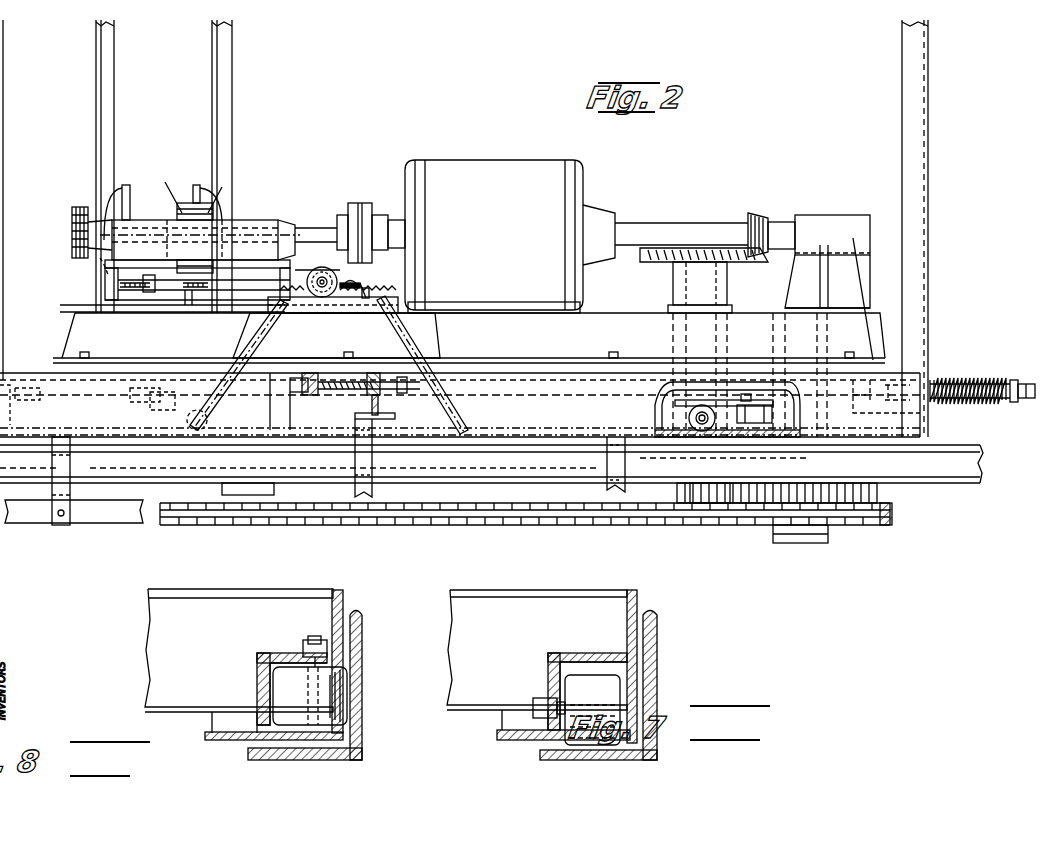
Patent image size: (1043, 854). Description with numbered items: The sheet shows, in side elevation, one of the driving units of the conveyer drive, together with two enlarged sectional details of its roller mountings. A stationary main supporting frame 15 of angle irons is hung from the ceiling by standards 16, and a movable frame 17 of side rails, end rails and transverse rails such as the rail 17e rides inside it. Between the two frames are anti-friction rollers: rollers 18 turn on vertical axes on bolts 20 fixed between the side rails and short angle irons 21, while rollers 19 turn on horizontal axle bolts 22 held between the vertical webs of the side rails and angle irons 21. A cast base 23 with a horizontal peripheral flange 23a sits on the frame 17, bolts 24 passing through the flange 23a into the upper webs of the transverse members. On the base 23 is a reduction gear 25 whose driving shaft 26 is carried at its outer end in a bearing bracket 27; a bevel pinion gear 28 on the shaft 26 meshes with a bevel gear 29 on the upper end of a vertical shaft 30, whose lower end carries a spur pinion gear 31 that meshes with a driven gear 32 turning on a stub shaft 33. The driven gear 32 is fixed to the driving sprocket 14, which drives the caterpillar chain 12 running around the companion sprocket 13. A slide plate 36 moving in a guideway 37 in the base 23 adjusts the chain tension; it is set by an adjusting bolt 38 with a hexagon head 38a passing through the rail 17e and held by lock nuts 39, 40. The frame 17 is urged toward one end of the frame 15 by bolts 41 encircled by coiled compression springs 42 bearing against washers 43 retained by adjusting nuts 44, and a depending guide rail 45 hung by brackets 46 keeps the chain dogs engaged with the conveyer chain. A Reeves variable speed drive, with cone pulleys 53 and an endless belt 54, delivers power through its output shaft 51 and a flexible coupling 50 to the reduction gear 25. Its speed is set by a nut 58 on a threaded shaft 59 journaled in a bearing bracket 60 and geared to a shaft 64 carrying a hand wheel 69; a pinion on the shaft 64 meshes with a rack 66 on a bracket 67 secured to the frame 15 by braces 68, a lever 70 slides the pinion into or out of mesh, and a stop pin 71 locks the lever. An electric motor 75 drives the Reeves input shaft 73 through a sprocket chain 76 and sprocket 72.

In FIG. 2, the caterpillar chain 12 is at (494, 522).
In FIG. 2, the sprocket 13 is at (205, 522).
In FIG. 2, the driving sprocket 14 is at (850, 525).
In FIG. 2, the main supporting frame 15 is at (460, 405).
In FIG. 8, the main supporting frame 15 is at (363, 645).
In FIG. 7, the main supporting frame 15 is at (658, 650).
In FIG. 2, the standards 16 is at (3, 125).
In FIG. 2, the movable frame 17 is at (330, 430).
In FIG. 8, the movable frame 17 is at (333, 592).
In FIG. 7, the movable frame 17 is at (627, 620).
In FIG. 2, the transverse rail 17e is at (380, 400).
In FIG. 2, the anti-friction roller 18 is at (780, 380).
In FIG. 8, the anti-friction roller 18 is at (310, 696).
In FIG. 2, the anti-friction roller 19 is at (692, 425).
In FIG. 7, the anti-friction roller 19 is at (592, 710).
In FIG. 2, the bolt 20 is at (748, 392).
In FIG. 8, the bolt 20 is at (305, 640).
In FIG. 2, the angle iron 21 is at (700, 392).
In FIG. 8, the angle iron 21 is at (258, 655).
In FIG. 7, the angle iron 21 is at (550, 655).
In FIG. 2, the axle bolt 22 is at (702, 425).
In FIG. 7, the axle bolt 22 is at (535, 712).
In FIG. 2, the base 23 is at (472, 331).
In FIG. 2, the peripheral flange 23a is at (500, 360).
In FIG. 2, the bolts 24 is at (82, 355).
In FIG. 2, the reduction gear 25 is at (510, 236).
In FIG. 2, the driving shaft 26 is at (682, 226).
In FIG. 2, the bearing bracket 27 is at (830, 220).
In FIG. 2, the bevel pinion gear 28 is at (760, 216).
In FIG. 2, the bevel gear 29 is at (663, 262).
In FIG. 2, the vertical shaft 30 is at (727, 290).
In FIG. 2, the spur pinion gear 31 is at (690, 492).
In FIG. 2, the driven gear 32 is at (870, 492).
In FIG. 2, the stub shaft 33 is at (810, 458).
In FIG. 2, the slide plate 36 is at (308, 396).
In FIG. 2, the guideway 37 is at (292, 385).
In FIG. 2, the adjusting bolt 38 is at (343, 420).
In FIG. 2, the hexagon head 38a is at (442, 362).
In FIG. 2, the lock nut 39 is at (375, 372).
In FIG. 2, the lock nut 40 is at (395, 362).
In FIG. 2, the bolt 41 is at (970, 402).
In FIG. 2, the coiled compression spring 42 is at (970, 380).
In FIG. 2, the washer 43 is at (1014, 380).
In FIG. 2, the adjusting nut 44 is at (1024, 400).
In FIG. 2, the guide rail 45 is at (100, 515).
In FIG. 2, the brackets 46 is at (70, 498).
In FIG. 2, the flexible coupling 50 is at (362, 203).
In FIG. 2, the output shaft 51 is at (313, 228).
In FIG. 2, the cone pulleys 53 is at (170, 215).
In FIG. 2, the endless belt 54 is at (200, 203).
In FIG. 2, the nut 58 is at (148, 292).
In FIG. 2, the threaded shaft 59 is at (190, 292).
In FIG. 2, the bearing bracket 60 is at (115, 275).
In FIG. 2, the shaft 64 is at (322, 275).
In FIG. 2, the rack 66 is at (375, 292).
In FIG. 2, the bracket 67 is at (325, 315).
In FIG. 2, the braces 68 is at (245, 350).
In FIG. 2, the hand wheel 69 is at (335, 272).
In FIG. 2, the lever 70 is at (350, 282).
In FIG. 2, the stop pin 71 is at (333, 306).
In FIG. 2, the sprocket 72 is at (75, 232).
In FIG. 2, the input shaft 73 is at (102, 262).
In FIG. 2, the electric motor 75 is at (132, 190).
In FIG. 2, the sprocket chain 76 is at (80, 206).